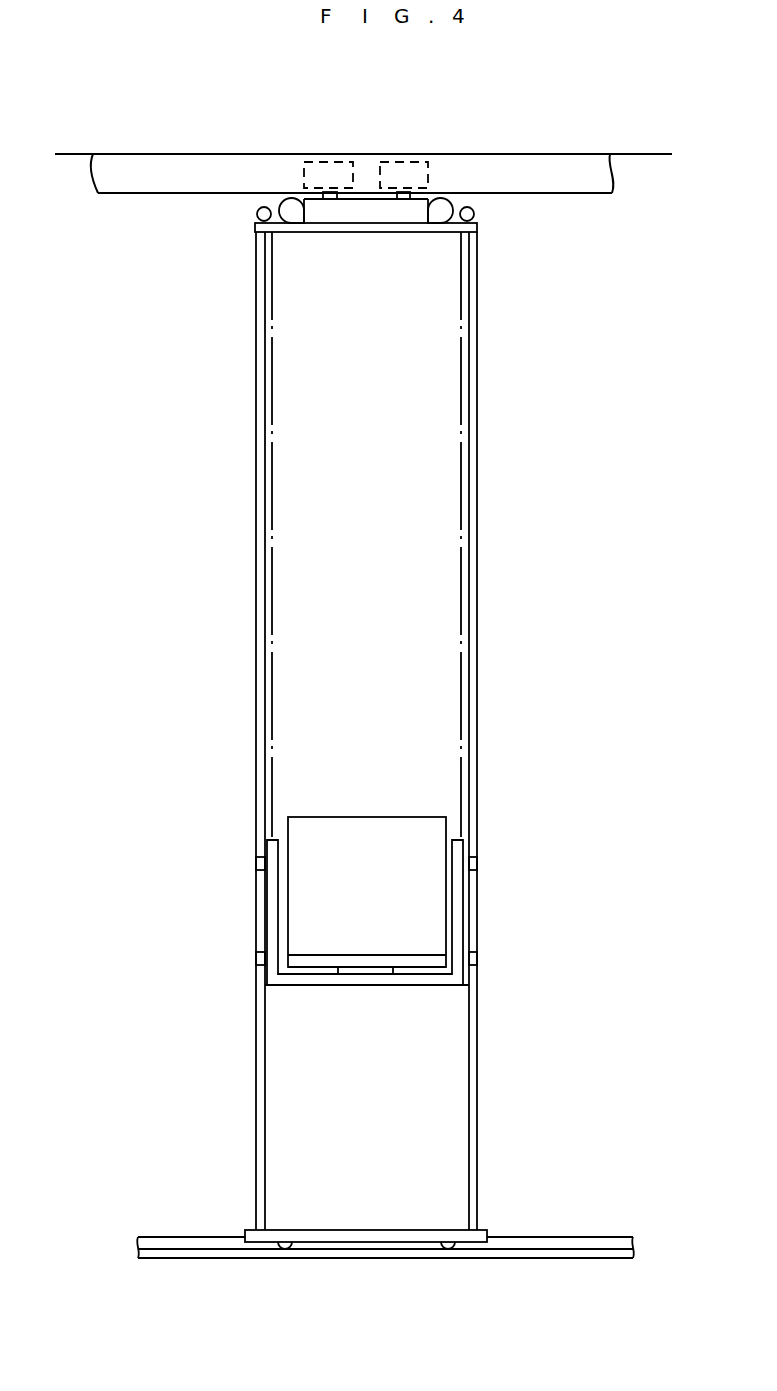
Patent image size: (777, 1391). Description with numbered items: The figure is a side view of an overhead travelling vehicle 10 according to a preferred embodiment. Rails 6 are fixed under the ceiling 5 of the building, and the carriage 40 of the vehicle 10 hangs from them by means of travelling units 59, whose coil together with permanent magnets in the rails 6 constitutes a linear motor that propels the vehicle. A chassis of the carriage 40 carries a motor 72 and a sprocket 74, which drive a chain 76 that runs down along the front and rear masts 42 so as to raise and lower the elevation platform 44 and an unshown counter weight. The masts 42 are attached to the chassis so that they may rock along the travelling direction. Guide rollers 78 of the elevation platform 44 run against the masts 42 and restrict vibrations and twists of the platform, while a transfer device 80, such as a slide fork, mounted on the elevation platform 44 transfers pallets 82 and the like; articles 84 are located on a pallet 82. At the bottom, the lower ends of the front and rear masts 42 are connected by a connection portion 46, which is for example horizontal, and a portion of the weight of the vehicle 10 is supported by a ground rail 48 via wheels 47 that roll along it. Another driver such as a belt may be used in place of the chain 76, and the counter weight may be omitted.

The ceiling 5 is at (645, 154).
The rails 6 is at (570, 187).
The overhead travelling vehicle 10 is at (380, 703).
The carriage 40 is at (390, 223).
The masts 42 is at (259, 812).
The elevation platform 44 is at (357, 985).
The connection portion 46 is at (362, 1232).
The wheels 47 is at (285, 1249).
The ground rail 48 is at (567, 1240).
The travelling units 59 is at (327, 167).
The motor 72 is at (288, 212).
The sprocket 74 is at (257, 215).
The chain 76 is at (461, 403).
The guide rollers 78 is at (258, 867).
The transfer device 80 is at (382, 973).
The pallet 82 is at (323, 962).
The articles 84 is at (358, 827).